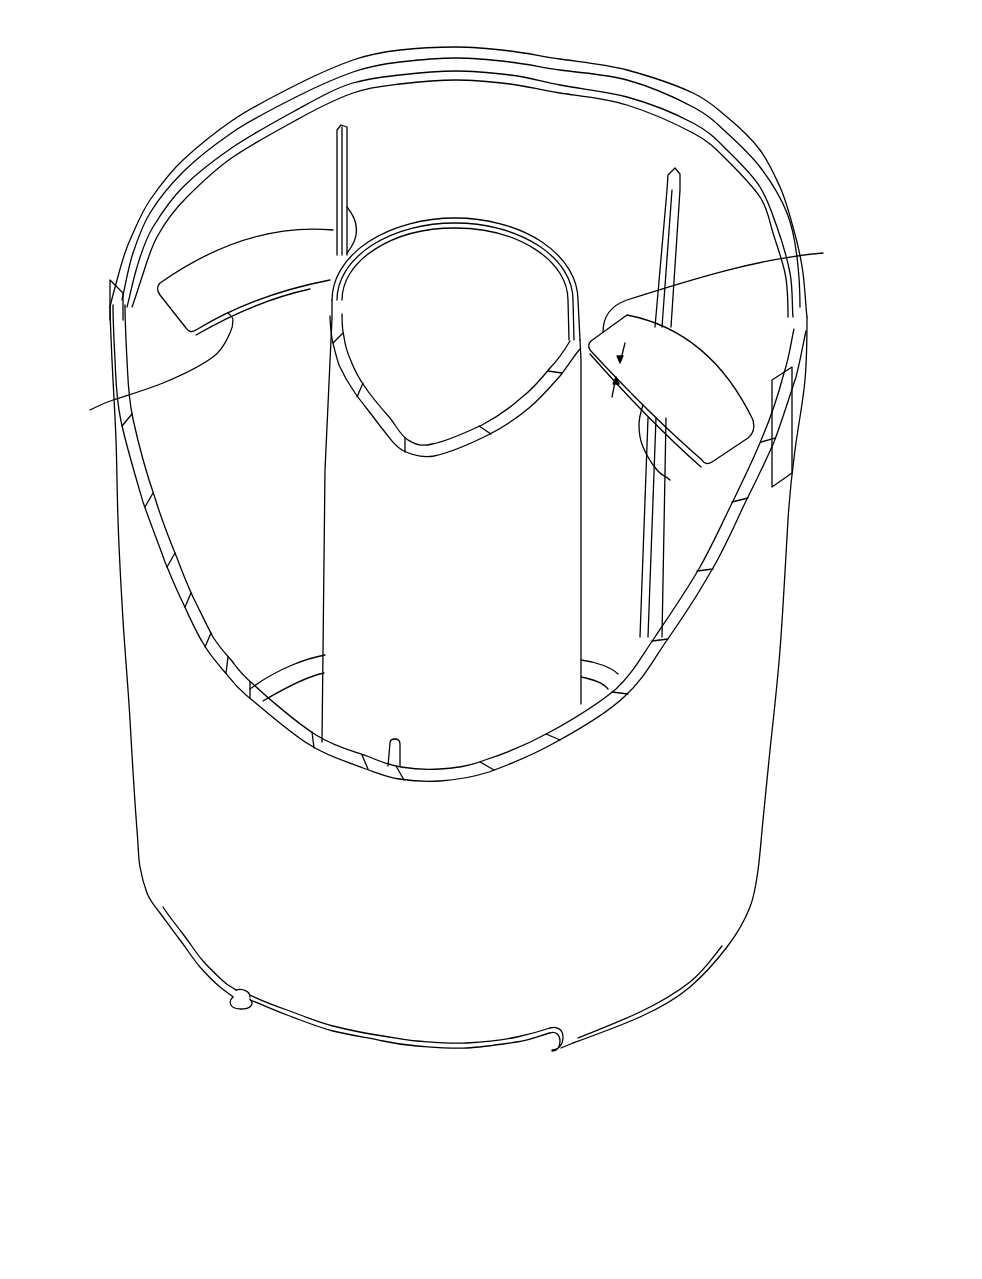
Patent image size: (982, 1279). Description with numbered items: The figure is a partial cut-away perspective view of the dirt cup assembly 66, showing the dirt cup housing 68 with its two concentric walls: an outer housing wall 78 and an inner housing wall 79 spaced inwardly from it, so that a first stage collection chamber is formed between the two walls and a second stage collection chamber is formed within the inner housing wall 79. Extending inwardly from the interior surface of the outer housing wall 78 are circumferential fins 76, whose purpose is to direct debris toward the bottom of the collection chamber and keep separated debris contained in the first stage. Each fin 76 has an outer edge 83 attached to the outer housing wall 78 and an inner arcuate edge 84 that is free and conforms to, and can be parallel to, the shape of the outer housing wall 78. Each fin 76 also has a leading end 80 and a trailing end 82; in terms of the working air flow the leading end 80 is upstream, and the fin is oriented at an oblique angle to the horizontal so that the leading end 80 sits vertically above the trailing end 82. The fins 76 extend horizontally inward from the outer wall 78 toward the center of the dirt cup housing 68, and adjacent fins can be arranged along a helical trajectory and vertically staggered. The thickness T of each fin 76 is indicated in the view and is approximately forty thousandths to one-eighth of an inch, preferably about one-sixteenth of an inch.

The dirt cup assembly 66 is at (98, 92).
The dirt cup housing 68 is at (128, 733).
The circumferential fin 76 is at (237, 263).
The outer housing wall 78 is at (622, 148).
The inner housing wall 79 is at (538, 687).
The leading end 80 is at (73, 337).
The trailing end 82 is at (347, 217).
The outer edge 83 is at (183, 273).
The inner arcuate edge 84 is at (670, 480).
The thickness T is at (620, 377).